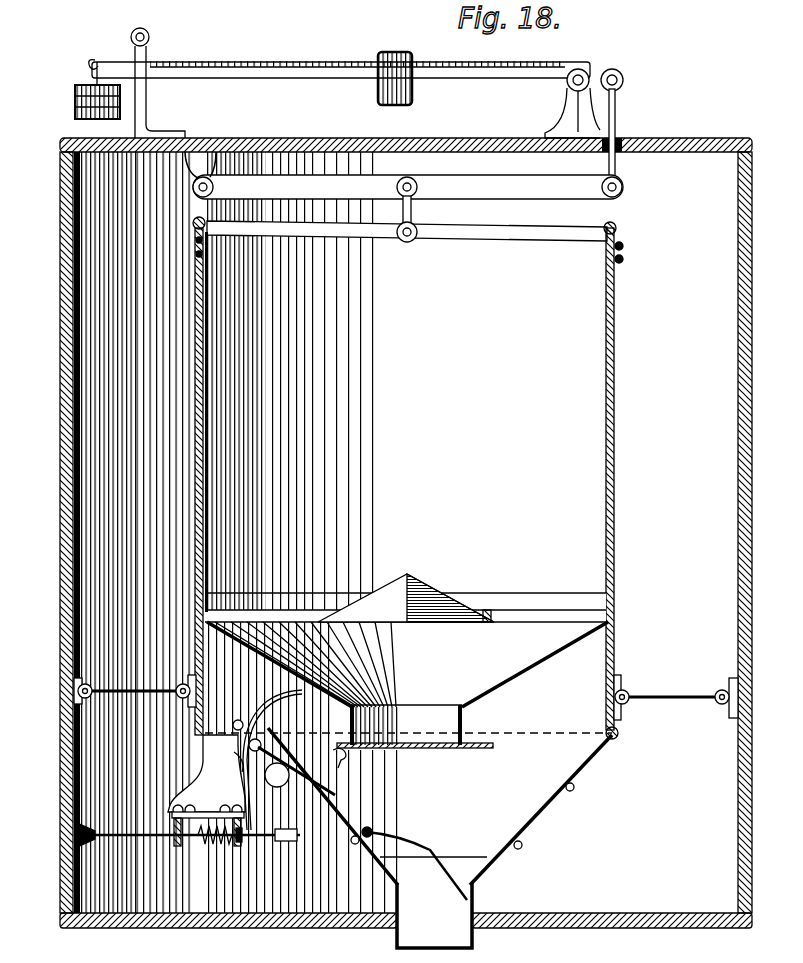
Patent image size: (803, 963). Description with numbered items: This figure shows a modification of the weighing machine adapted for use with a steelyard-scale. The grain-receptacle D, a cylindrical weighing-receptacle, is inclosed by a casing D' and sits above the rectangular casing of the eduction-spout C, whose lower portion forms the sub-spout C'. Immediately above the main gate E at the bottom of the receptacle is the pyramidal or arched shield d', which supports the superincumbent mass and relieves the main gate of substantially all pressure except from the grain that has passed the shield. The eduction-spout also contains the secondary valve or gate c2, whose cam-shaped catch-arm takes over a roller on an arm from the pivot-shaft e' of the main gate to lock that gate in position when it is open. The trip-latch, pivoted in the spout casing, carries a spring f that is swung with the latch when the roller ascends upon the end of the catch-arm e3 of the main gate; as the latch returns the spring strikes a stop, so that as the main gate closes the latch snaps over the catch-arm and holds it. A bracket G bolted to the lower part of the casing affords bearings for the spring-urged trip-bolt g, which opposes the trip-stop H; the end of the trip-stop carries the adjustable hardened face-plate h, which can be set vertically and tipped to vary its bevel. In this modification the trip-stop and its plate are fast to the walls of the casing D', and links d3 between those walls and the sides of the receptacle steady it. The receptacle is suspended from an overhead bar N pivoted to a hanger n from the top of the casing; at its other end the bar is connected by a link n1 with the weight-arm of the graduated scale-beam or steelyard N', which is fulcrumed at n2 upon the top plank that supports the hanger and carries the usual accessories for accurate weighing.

The trip-stop H is at (385, 533).
The casing D' is at (724, 532).
The scale-beam or steelyard N' is at (332, 83).
The fulcrum n2 is at (584, 89).
The link n1 is at (618, 180).
The overhead bar N is at (408, 208).
The hanger n is at (207, 165).
The weighing-receptacle D is at (414, 483).
The shield d' is at (406, 592).
The links d3 is at (406, 696).
The main gate E is at (405, 748).
The eduction-spout casing C is at (443, 806).
The secondary valve or gate c2 is at (414, 863).
The sub-spout C' is at (434, 915).
The bracket G is at (206, 790).
The lever arm F' is at (272, 760).
The spring f is at (241, 753).
The pivot-shaft e' is at (303, 763).
The catch-arm e3 is at (297, 771).
The face-plate h is at (187, 850).
The trip-bolt g is at (218, 845).